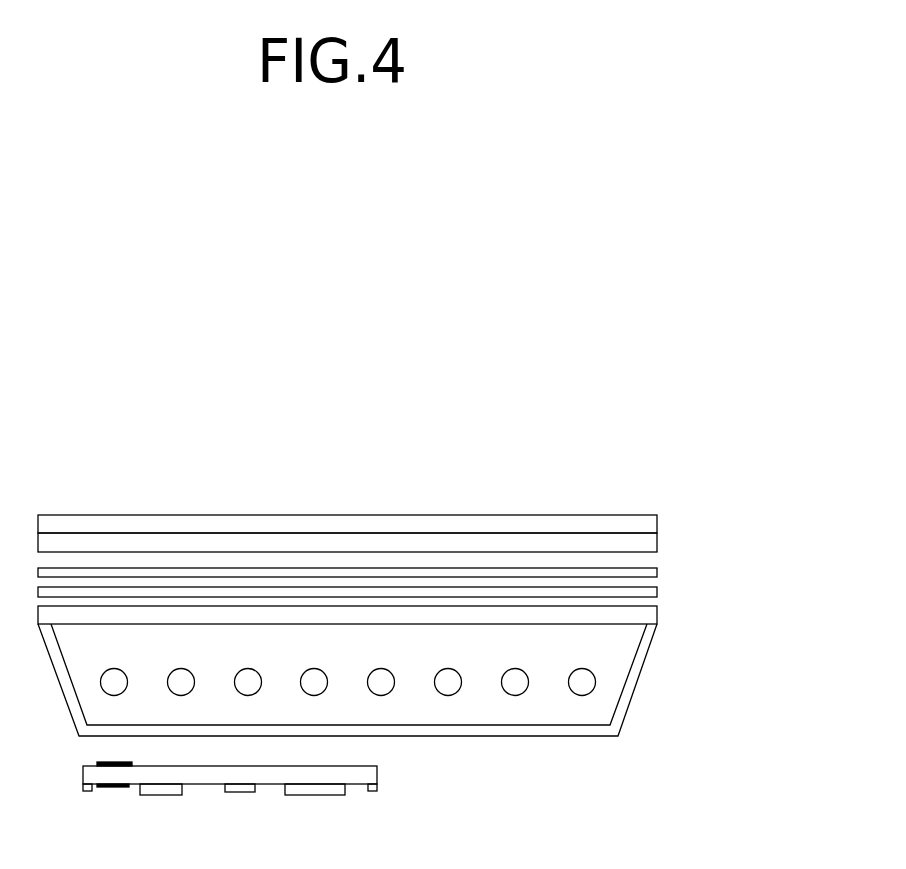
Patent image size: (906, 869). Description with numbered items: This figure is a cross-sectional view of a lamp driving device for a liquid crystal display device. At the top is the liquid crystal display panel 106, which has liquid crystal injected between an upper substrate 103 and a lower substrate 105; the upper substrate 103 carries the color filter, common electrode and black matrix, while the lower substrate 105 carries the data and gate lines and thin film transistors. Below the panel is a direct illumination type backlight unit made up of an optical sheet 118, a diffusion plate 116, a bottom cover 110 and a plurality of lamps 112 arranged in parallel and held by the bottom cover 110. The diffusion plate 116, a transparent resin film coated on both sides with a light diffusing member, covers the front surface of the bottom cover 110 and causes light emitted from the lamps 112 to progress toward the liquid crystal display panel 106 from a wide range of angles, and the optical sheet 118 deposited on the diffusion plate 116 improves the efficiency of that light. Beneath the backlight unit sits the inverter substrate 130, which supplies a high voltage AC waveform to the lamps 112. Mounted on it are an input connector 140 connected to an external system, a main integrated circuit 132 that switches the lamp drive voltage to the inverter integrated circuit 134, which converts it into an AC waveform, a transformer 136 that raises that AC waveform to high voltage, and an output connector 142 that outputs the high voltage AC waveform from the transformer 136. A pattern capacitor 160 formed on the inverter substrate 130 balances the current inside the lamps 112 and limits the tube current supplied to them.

The upper substrate 103 is at (427, 523).
The lower substrate 105 is at (460, 547).
The liquid crystal display panel 106 is at (347, 470).
The bottom cover 110 is at (512, 729).
The lamps 112 is at (582, 682).
The diffusion plate 116 is at (653, 610).
The optical sheet 118 is at (650, 570).
The inverter substrate 130 is at (377, 775).
The main integrated circuit 132 is at (310, 790).
The inverter integrated circuit 134 is at (242, 790).
The transformer 136 is at (167, 792).
The input connector 140 is at (375, 790).
The output connector 142 is at (85, 788).
The pattern capacitor 160 is at (113, 798).